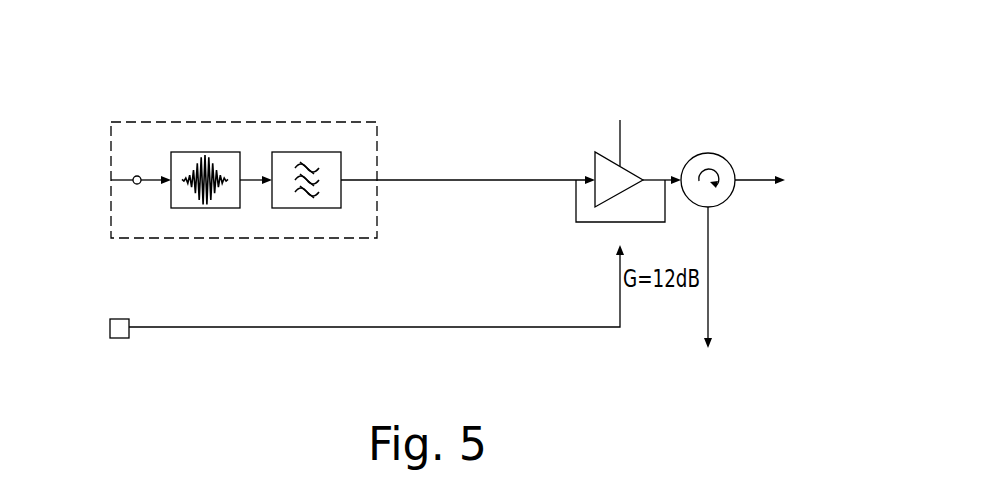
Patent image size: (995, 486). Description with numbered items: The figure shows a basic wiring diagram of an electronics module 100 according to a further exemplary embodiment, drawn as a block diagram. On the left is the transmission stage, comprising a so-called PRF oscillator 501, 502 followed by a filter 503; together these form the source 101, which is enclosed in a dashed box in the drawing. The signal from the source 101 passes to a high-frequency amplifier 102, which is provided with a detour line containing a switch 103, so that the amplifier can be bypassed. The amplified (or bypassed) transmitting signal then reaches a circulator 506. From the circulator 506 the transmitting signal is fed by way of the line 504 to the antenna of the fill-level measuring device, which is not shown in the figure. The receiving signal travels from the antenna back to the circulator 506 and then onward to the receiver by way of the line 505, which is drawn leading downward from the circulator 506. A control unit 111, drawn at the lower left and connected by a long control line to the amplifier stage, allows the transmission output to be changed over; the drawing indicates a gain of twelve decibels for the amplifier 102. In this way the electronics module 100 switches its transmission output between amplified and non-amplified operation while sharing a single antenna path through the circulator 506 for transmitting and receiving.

The electronics module 100 is at (656, 342).
The source 101 is at (245, 238).
The high-frequency amplifier 102 is at (620, 120).
The switch 103 is at (625, 223).
The control unit 111 is at (118, 338).
The PRF oscillator 501 is at (111, 180).
The PRF oscillator 502 is at (205, 152).
The filter 503 is at (305, 152).
The line 504 is at (755, 185).
The line 505 is at (710, 298).
The circulator 506 is at (700, 154).